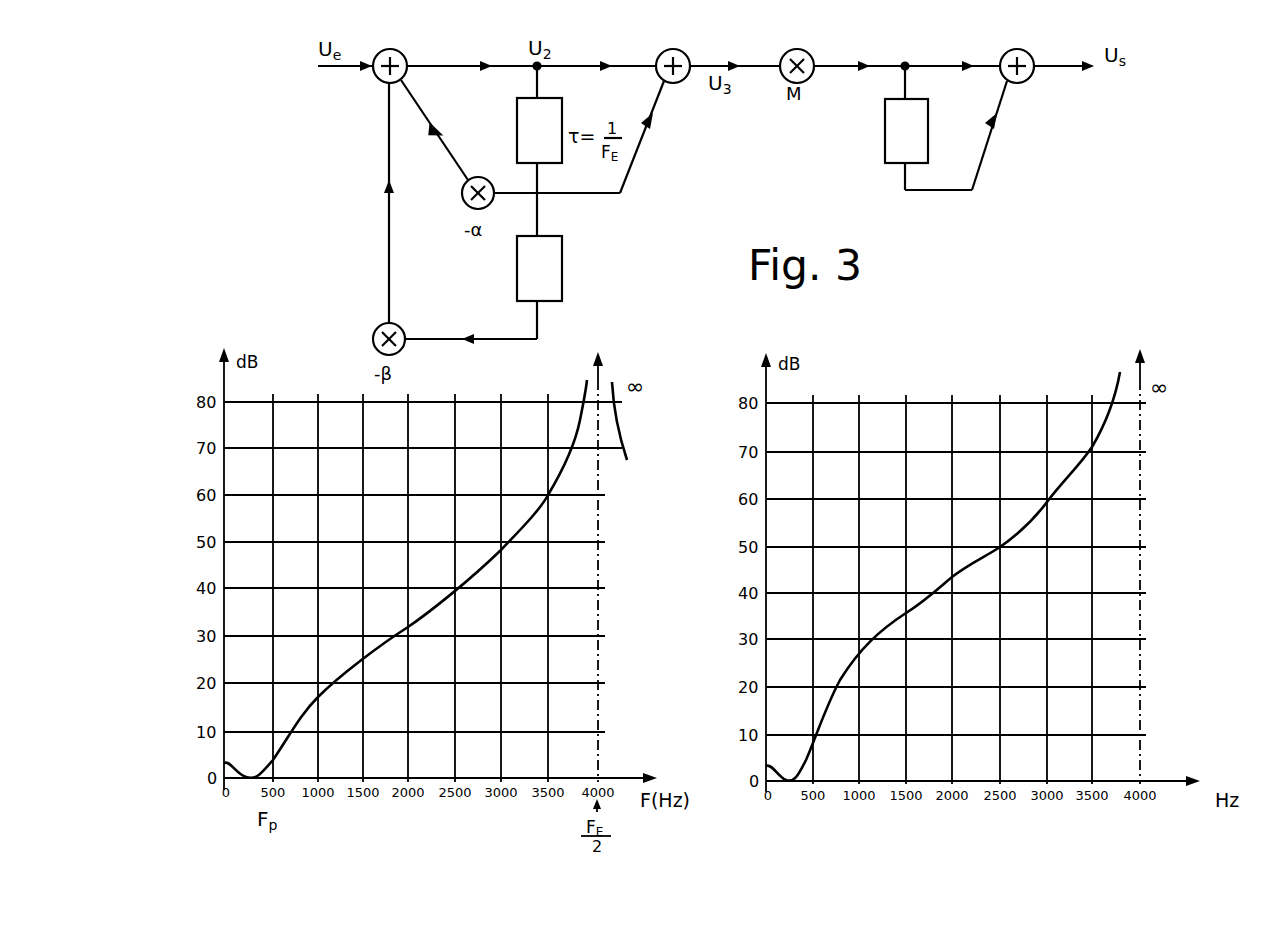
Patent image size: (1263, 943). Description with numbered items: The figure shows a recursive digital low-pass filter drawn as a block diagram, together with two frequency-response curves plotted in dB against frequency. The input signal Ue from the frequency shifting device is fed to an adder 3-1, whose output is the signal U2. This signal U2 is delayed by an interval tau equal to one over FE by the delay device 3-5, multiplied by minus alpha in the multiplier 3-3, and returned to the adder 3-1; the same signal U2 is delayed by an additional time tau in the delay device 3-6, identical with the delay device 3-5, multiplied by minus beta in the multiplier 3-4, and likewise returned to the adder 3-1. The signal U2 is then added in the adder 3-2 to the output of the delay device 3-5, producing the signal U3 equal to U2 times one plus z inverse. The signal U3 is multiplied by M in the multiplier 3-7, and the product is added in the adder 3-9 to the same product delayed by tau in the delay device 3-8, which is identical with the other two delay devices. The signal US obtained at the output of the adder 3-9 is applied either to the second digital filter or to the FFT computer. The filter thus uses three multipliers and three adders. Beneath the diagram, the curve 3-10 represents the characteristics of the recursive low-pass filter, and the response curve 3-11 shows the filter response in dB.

The adder 3-1 is at (403, 56).
The adder 3-2 is at (686, 56).
The multiplier 3-3 is at (465, 180).
The multiplier 3-4 is at (376, 334).
The delay device 3-5 is at (562, 108).
The delay device 3-6 is at (562, 285).
The multiplier 3-7 is at (810, 56).
The delay device 3-8 is at (885, 122).
The adder 3-9 is at (1030, 56).
The curve 3-10 is at (468, 579).
The response curve 3-11 is at (943, 585).